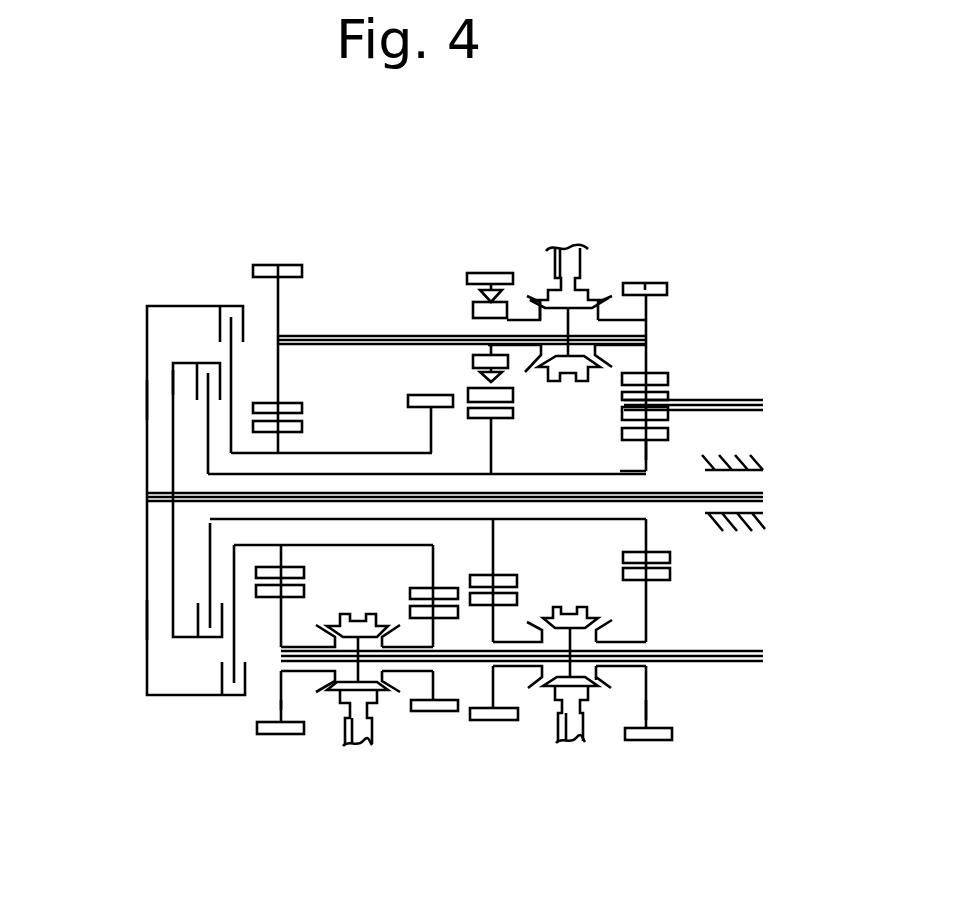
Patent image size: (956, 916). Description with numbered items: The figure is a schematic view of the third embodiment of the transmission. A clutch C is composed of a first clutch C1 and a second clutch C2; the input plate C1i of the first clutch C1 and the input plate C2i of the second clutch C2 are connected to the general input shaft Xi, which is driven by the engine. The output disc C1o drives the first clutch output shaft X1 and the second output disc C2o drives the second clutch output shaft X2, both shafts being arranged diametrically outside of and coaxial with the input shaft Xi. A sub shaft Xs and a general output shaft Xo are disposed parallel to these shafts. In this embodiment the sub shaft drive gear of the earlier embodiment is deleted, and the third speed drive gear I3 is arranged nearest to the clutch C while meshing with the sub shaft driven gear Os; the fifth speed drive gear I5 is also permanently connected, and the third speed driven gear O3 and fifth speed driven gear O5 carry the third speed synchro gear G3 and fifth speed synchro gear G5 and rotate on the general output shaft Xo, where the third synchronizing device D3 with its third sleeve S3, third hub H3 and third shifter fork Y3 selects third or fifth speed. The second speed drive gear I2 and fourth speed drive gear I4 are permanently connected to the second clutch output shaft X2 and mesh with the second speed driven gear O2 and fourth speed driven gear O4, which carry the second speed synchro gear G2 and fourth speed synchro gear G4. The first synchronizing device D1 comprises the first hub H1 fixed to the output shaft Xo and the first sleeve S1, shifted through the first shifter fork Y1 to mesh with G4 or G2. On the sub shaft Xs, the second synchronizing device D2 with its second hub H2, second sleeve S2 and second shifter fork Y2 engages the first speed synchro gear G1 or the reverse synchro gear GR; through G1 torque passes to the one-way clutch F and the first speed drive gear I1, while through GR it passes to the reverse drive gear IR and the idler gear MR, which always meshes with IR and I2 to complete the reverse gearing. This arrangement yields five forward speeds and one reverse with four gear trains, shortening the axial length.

The first clutch C1 is at (212, 306).
The second clutch C2 is at (187, 363).
The input plate of the first clutch C1i is at (147, 393).
The output disc of the first clutch C1o is at (231, 410).
The input plate of the second clutch C2i is at (170, 382).
The second output disc C2o is at (207, 423).
The clutch C is at (127, 607).
The sub shaft driven gear Os is at (283, 265).
The third speed drive gear I3 is at (303, 425).
The fifth speed drive gear I5 is at (431, 395).
The fourth speed drive gear I4 is at (475, 418).
The first speed drive gear I1 is at (485, 272).
The second speed drive gear I2 is at (623, 435).
The reverse drive gear IR is at (655, 282).
The one-way clutch F is at (470, 293).
The first speed synchro gear G1 is at (537, 298).
The second speed synchro gear G2 is at (607, 690).
The third speed synchro gear G3 is at (317, 691).
The fourth speed synchro gear G4 is at (534, 690).
The fifth speed synchro gear G5 is at (392, 691).
The reverse synchro gear GR is at (608, 302).
The first shifter fork Y1 is at (556, 743).
The second shifter fork Y2 is at (585, 248).
The third shifter fork Y3 is at (353, 745).
The first synchronizing device D1 is at (697, 758).
The second synchronizing device D2 is at (680, 258).
The third synchronizing device D3 is at (312, 828).
The sub shaft Xs is at (646, 326).
The general input shaft Xi is at (757, 490).
The general output shaft Xo is at (745, 650).
The first clutch output shaft X1 is at (381, 452).
The second clutch output shaft X2 is at (518, 519).
The idler gear MR is at (668, 396).
The first sleeve S1 is at (562, 607).
The second sleeve S2 is at (558, 382).
The third sleeve S3 is at (357, 613).
The first hub H1 is at (600, 637).
The second hub H2 is at (528, 372).
The third hub H3 is at (313, 624).
The second speed driven gear O2 is at (647, 740).
The third speed driven gear O3 is at (434, 712).
The fourth speed driven gear O4 is at (493, 720).
The fifth speed driven gear O5 is at (267, 733).